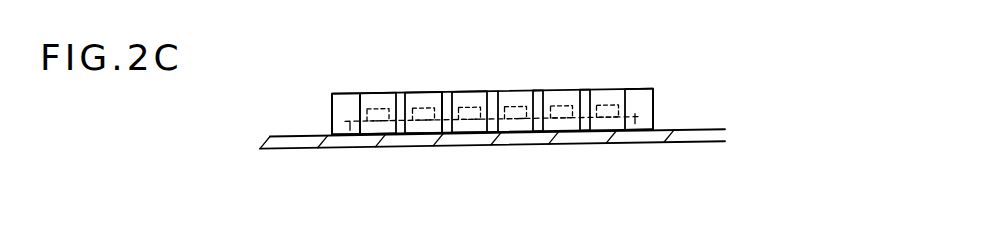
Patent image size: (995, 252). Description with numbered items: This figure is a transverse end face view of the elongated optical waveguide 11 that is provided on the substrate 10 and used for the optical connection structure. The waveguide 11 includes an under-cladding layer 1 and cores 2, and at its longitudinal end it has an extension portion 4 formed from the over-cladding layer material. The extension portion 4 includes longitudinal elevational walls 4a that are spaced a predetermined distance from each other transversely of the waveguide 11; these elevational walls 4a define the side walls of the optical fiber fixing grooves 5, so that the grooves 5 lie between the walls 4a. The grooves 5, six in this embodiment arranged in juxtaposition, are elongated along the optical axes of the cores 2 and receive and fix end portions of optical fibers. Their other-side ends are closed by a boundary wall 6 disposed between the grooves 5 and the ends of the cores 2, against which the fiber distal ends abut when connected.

The under-cladding layer 1 is at (469, 127).
The cores 2 is at (514, 107).
The extension portion 4 is at (332, 104).
The longitudinal elevational walls 4a is at (585, 102).
The optical fiber fixing grooves 5 is at (424, 99).
The boundary wall 6 is at (565, 118).
The substrate 10 is at (638, 134).
The optical waveguide 11 is at (637, 82).